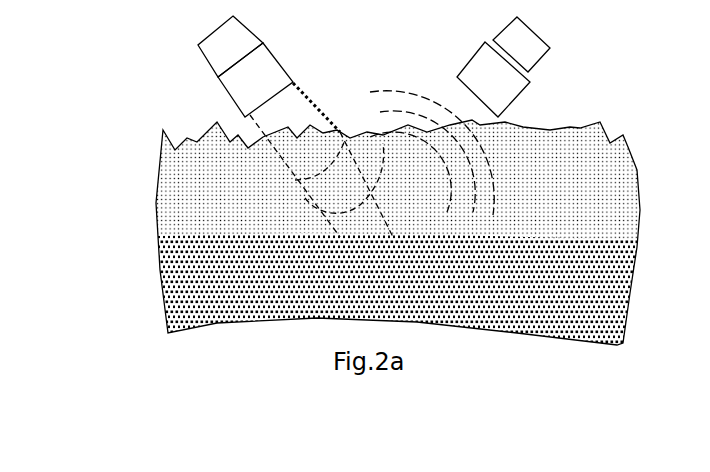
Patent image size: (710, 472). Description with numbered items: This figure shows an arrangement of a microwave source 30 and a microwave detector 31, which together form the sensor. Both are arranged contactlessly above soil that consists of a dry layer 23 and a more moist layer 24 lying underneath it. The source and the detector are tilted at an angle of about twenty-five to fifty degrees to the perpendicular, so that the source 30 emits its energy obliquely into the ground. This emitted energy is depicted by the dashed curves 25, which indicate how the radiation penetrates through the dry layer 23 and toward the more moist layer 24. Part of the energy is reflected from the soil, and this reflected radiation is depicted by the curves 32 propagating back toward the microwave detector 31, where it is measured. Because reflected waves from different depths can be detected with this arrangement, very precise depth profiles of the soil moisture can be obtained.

The dry layer 23 is at (190, 182).
The more moist layer 24 is at (190, 253).
The dashed curves 25 is at (308, 114).
The microwave source 30 is at (220, 47).
The microwave detector 31 is at (518, 44).
The curves 32 is at (490, 147).